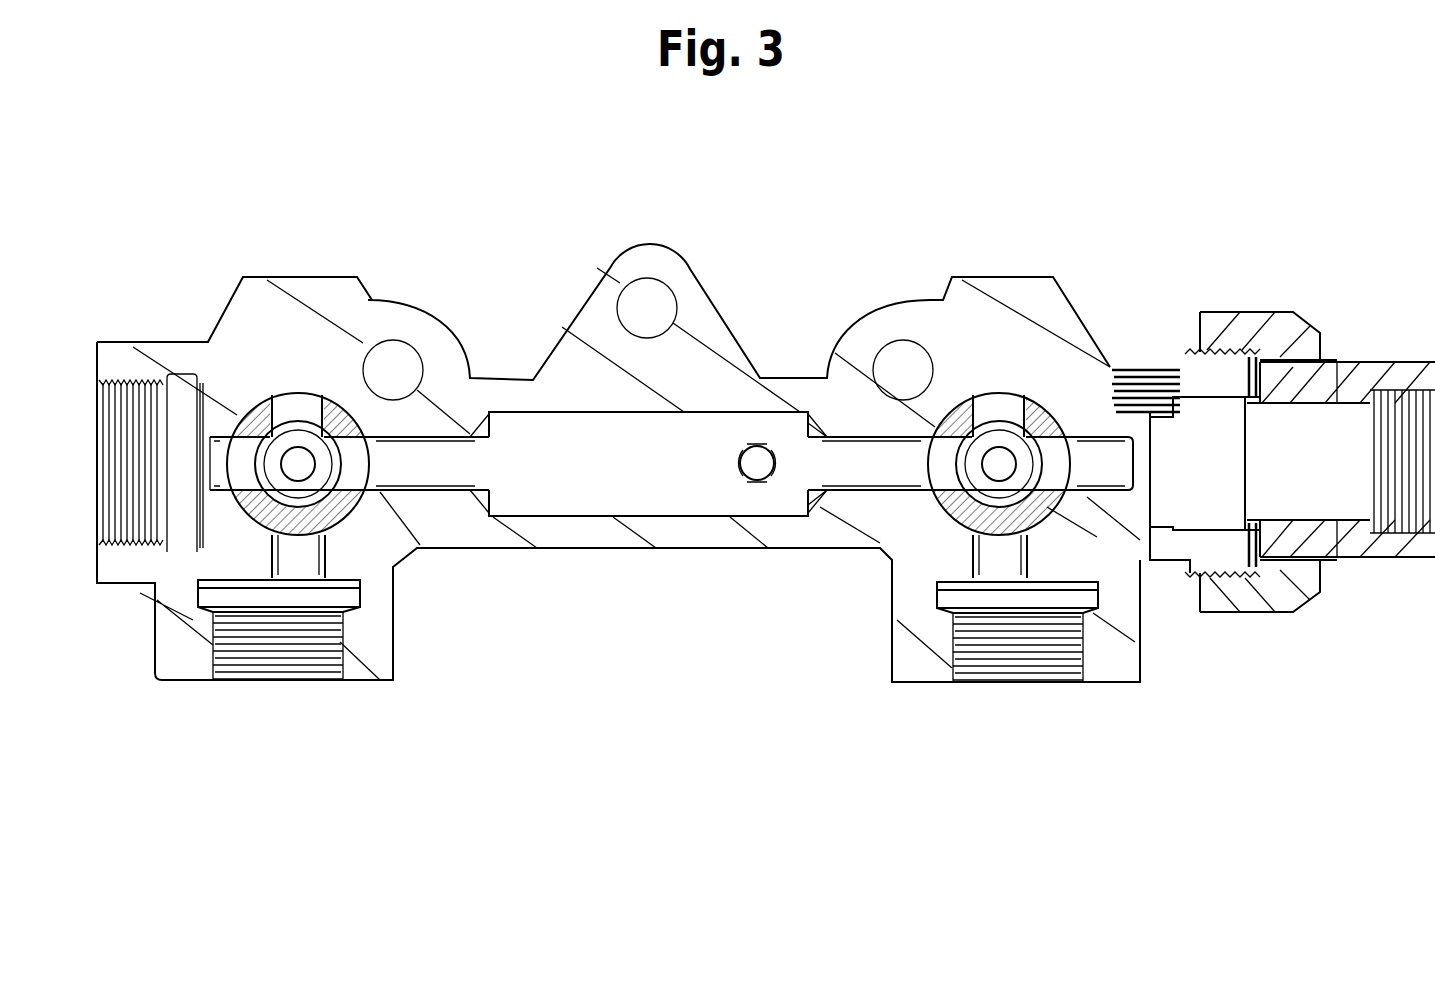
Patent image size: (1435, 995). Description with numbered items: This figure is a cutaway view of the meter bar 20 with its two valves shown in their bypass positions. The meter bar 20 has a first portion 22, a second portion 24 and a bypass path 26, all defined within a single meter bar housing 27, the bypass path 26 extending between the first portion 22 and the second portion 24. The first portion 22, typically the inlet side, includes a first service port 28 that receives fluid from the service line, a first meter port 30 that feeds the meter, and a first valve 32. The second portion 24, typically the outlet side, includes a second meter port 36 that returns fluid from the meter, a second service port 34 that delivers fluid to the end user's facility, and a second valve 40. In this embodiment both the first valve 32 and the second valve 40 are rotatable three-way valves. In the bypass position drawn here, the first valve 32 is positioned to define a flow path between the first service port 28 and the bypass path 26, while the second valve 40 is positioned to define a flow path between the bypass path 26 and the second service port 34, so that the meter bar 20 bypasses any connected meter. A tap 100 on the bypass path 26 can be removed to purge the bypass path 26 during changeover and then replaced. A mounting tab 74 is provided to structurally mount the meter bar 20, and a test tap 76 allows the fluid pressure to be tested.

The meter bar 20 is at (499, 232).
The first portion 22 is at (286, 243).
The second portion 24 is at (1050, 259).
The bypass path 26 is at (585, 500).
The meter bar housing 27 is at (404, 260).
The first service port 28 is at (257, 437).
The first meter port 30 is at (305, 562).
The first valve 32 is at (257, 381).
The second service port 34 is at (1122, 458).
The second meter port 36 is at (983, 558).
The second valve 40 is at (931, 521).
The mounting tab 74 is at (693, 295).
The test tap 76 is at (1150, 367).
The tap 100 is at (757, 452).